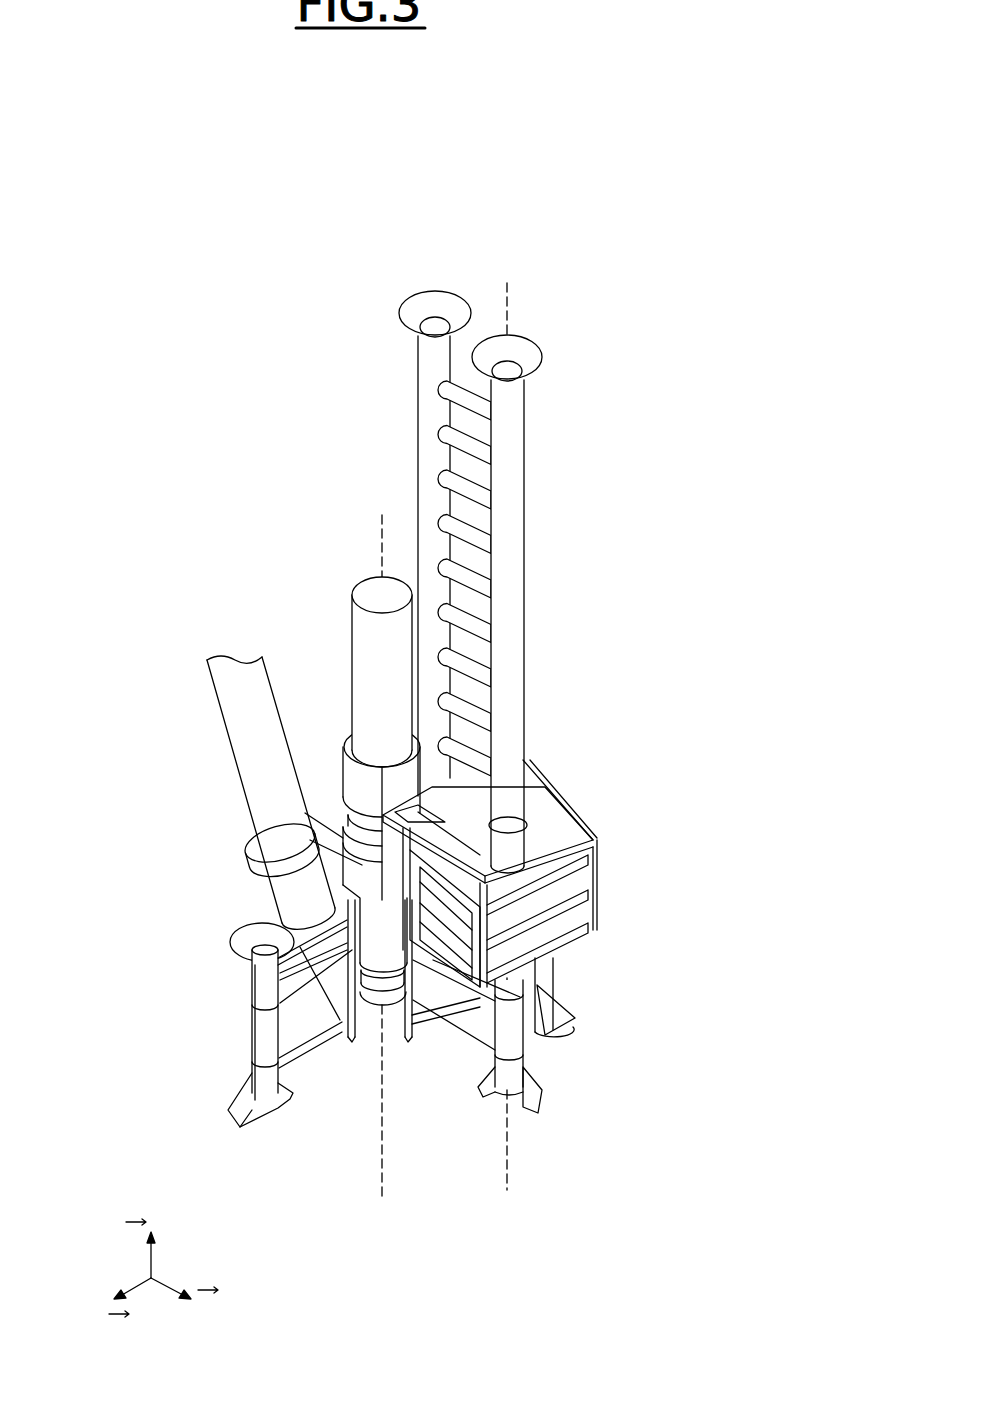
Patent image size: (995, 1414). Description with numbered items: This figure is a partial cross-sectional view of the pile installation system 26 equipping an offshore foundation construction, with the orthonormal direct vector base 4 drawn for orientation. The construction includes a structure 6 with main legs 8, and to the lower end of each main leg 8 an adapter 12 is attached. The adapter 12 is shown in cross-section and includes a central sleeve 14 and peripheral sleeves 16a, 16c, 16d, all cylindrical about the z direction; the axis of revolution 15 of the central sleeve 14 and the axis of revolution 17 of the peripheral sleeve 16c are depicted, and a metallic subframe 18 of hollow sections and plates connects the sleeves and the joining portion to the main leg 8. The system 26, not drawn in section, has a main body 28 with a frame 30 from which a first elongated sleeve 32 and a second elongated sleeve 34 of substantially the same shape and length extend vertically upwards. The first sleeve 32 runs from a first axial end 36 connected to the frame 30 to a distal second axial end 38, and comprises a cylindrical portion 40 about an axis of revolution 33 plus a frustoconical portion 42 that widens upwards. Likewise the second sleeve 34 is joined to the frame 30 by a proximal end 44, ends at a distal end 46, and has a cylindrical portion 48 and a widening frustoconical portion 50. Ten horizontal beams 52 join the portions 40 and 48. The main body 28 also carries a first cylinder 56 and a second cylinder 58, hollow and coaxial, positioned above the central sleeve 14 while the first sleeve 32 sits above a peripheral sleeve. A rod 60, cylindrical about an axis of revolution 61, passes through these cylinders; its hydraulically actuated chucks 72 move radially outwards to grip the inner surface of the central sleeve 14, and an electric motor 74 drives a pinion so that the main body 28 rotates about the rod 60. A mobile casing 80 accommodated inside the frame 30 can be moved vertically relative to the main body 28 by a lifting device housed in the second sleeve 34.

The orthonormal direct vector base 4 is at (97, 1330).
The structure 6 is at (260, 795).
The main leg 8 is at (232, 741).
The adapter 12 is at (401, 1050).
The central sleeve 14 is at (420, 1005).
The axis of revolution of the central sleeve 15 is at (382, 1198).
The peripheral sleeve 16a is at (252, 1000).
The peripheral sleeve 16c is at (515, 1078).
The peripheral sleeve 16d is at (548, 972).
The axis of revolution of the peripheral sleeve 16c 17 is at (507, 1184).
The metallic subframe 18 is at (290, 990).
The pile installation system 26 is at (486, 565).
The main body 28 is at (520, 862).
The frame 30 is at (428, 1008).
The first elongated sleeve 32 is at (517, 612).
The axis of revolution of the cylindrical portion 33 is at (507, 299).
The second elongated sleeve 34 is at (425, 470).
The first axial end 36 is at (510, 812).
The second axial end 38 is at (540, 372).
The cylindrical portion 40 is at (512, 673).
The frustoconical portion 42 is at (528, 345).
The proximal end 44 is at (475, 788).
The distal end 46 is at (408, 299).
The cylindrical portion 48 is at (418, 422).
The frustoconical portion 50 is at (408, 325).
The horizontal beam 52 is at (473, 497).
The first cylinder 56 is at (360, 790).
The second cylinder 58 is at (360, 863).
The rod 60 is at (352, 673).
The axis of revolution of the rod 61 is at (382, 551).
The radially movable chuck 72 is at (377, 980).
The electric motor 74 is at (560, 870).
The mobile casing 80 is at (590, 928).